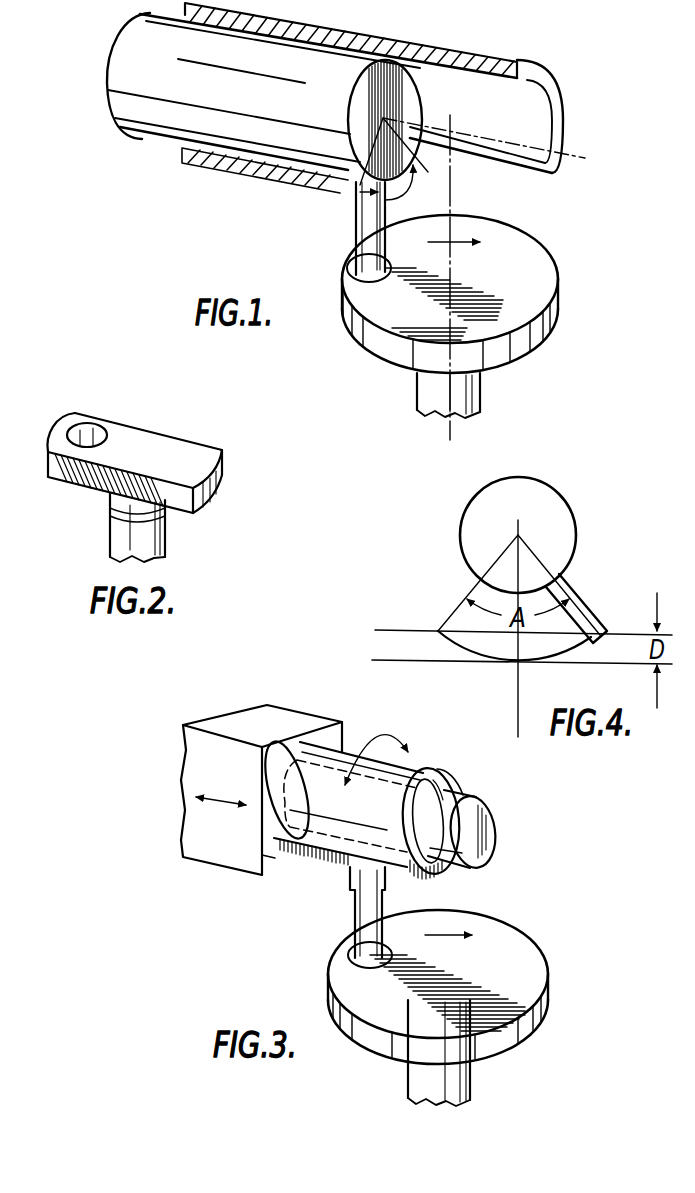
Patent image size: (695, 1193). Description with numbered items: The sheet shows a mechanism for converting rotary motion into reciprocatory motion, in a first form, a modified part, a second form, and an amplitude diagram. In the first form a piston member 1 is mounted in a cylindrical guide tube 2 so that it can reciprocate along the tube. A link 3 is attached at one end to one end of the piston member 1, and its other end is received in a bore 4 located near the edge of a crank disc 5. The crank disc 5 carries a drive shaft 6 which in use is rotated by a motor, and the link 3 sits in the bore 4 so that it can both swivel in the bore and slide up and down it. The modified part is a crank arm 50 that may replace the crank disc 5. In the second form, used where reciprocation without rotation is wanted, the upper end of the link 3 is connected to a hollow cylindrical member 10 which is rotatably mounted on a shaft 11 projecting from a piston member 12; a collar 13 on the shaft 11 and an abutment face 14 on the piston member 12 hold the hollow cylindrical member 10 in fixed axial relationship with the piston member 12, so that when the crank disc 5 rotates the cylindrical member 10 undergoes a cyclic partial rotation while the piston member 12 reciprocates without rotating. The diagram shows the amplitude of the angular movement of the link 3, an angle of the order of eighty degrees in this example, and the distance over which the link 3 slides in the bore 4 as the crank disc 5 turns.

In FIG. 1, the piston member 1 is at (128, 43).
In FIG. 4, the piston member 1 is at (552, 535).
In FIG. 1, the cylindrical guide tube 2 is at (505, 70).
In FIG. 1, the link 3 is at (387, 203).
In FIG. 4, the link 3 is at (586, 607).
In FIG. 1, the bore 4 is at (350, 268).
In FIG. 2, the bore 4 is at (97, 441).
In FIG. 3, the bore 4 is at (370, 917).
In FIG. 1, the crank disc 5 is at (545, 282).
In FIG. 3, the crank disc 5 is at (530, 957).
In FIG. 1, the drive shaft 6 is at (433, 393).
In FIG. 2, the drive shaft 6 is at (118, 538).
In FIG. 3, the drive shaft 6 is at (415, 1081).
In FIG. 2, the crank arm 50 is at (188, 457).
In FIG. 4, the hollow cylindrical member 10 is at (569, 532).
In FIG. 3, the hollow cylindrical member 10 is at (412, 770).
In FIG. 3, the shaft 11 is at (443, 845).
In FIG. 3, the piston member 12 is at (300, 721).
In FIG. 3, the collar 13 is at (448, 786).
In FIG. 3, the abutment face 14 is at (267, 858).